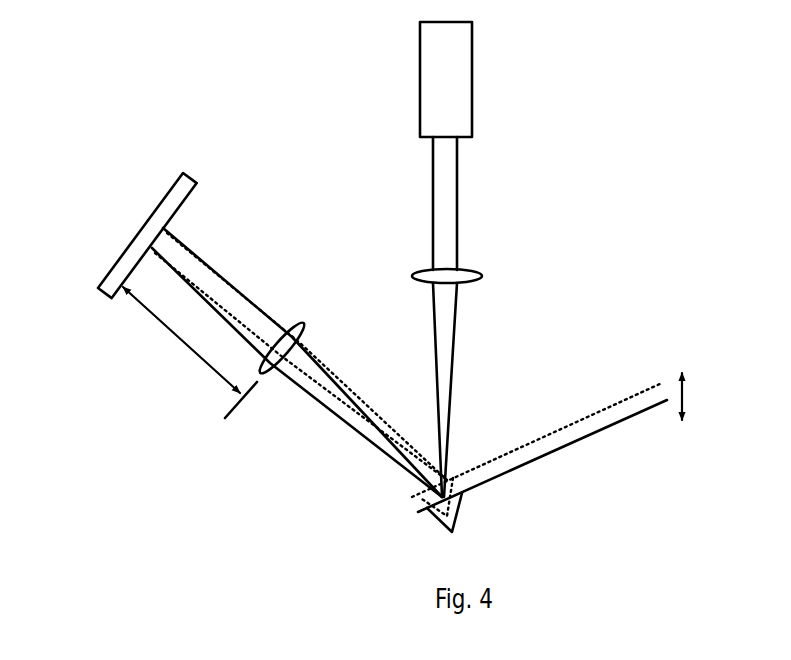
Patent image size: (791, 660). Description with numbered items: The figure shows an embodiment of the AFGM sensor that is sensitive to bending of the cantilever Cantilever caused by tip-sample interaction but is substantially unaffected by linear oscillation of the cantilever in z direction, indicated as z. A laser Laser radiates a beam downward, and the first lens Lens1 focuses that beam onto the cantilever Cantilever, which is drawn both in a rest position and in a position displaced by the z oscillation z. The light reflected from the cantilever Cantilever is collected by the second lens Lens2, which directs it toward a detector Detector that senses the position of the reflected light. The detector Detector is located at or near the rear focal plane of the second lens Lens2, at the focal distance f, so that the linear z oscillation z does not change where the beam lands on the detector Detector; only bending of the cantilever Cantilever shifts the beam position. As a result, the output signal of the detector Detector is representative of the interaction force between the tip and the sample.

The laser Laser is at (485, 79).
The lens 1 Lens1 is at (491, 279).
The lens 2 Lens2 is at (299, 327).
The detector Detector is at (112, 235).
The cantilever Cantilever is at (539, 457).
The rear focal length of lens 2 f is at (190, 352).
The z oscillation z is at (702, 396).